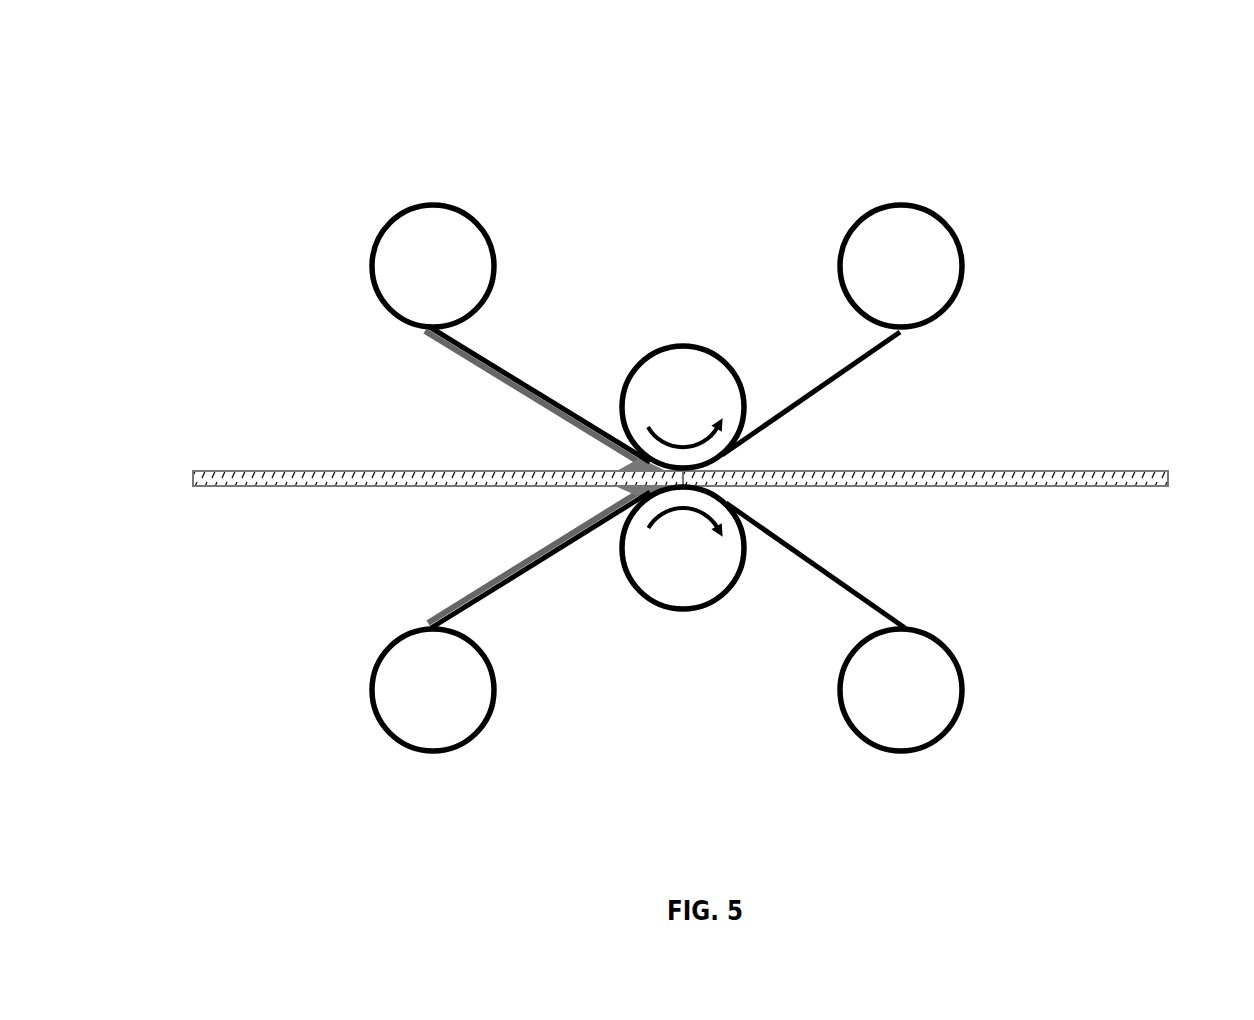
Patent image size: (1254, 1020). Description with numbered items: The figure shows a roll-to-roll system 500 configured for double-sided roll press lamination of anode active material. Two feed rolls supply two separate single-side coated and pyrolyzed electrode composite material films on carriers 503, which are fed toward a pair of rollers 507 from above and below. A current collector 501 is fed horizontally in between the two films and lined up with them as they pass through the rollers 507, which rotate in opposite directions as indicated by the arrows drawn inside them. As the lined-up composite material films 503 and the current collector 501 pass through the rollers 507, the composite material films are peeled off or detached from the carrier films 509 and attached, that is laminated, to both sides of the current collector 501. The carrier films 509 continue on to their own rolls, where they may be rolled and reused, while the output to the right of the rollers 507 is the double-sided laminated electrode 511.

The roll-to-roll system 500 is at (232, 85).
The current collector 501 is at (271, 462).
The pyrolyzed electrode composite material films on carriers 503 is at (424, 352).
The rollers 507 is at (636, 660).
The carrier films 509 is at (873, 377).
The double-sided laminated electrode 511 is at (1095, 455).